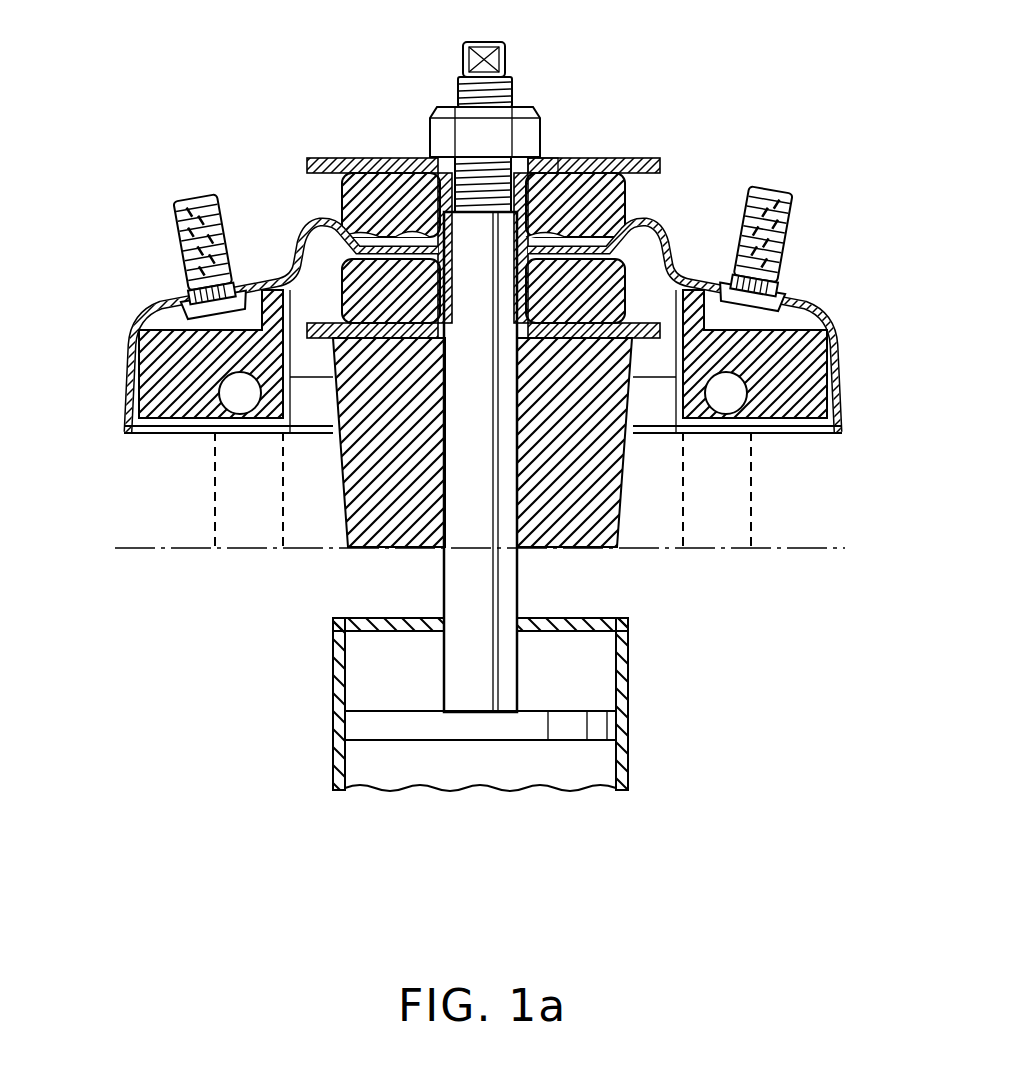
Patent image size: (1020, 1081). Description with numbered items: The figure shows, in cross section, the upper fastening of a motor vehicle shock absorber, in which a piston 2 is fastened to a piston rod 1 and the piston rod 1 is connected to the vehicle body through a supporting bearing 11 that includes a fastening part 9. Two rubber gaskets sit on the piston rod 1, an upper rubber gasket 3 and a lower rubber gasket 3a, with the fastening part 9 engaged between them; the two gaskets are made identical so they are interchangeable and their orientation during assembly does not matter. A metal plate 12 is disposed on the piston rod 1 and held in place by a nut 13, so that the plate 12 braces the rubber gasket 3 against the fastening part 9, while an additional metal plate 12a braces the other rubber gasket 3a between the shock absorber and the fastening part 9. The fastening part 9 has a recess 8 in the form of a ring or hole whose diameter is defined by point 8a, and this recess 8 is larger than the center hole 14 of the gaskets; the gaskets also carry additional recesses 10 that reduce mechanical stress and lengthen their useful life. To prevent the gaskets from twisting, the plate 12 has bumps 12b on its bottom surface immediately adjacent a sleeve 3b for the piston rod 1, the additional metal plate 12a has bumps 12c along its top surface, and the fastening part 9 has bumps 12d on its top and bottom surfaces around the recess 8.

The piston rod 1 is at (505, 588).
The piston 2 is at (598, 682).
The rubber gasket 3 is at (479, 176).
The rubber gasket 3a is at (333, 228).
The sleeve 3b is at (515, 235).
The recess 8 is at (449, 316).
The point 8a is at (660, 248).
The fastening part 9 is at (160, 310).
The recesses 10 is at (400, 262).
The supporting bearing 11 is at (116, 352).
The plate 12 is at (529, 333).
The additional metal plate 12a is at (628, 338).
The bumps 12b is at (548, 172).
The bumps 12c is at (548, 338).
The bumps 12d is at (635, 155).
The nut 13 is at (527, 128).
The center hole 14 is at (410, 232).